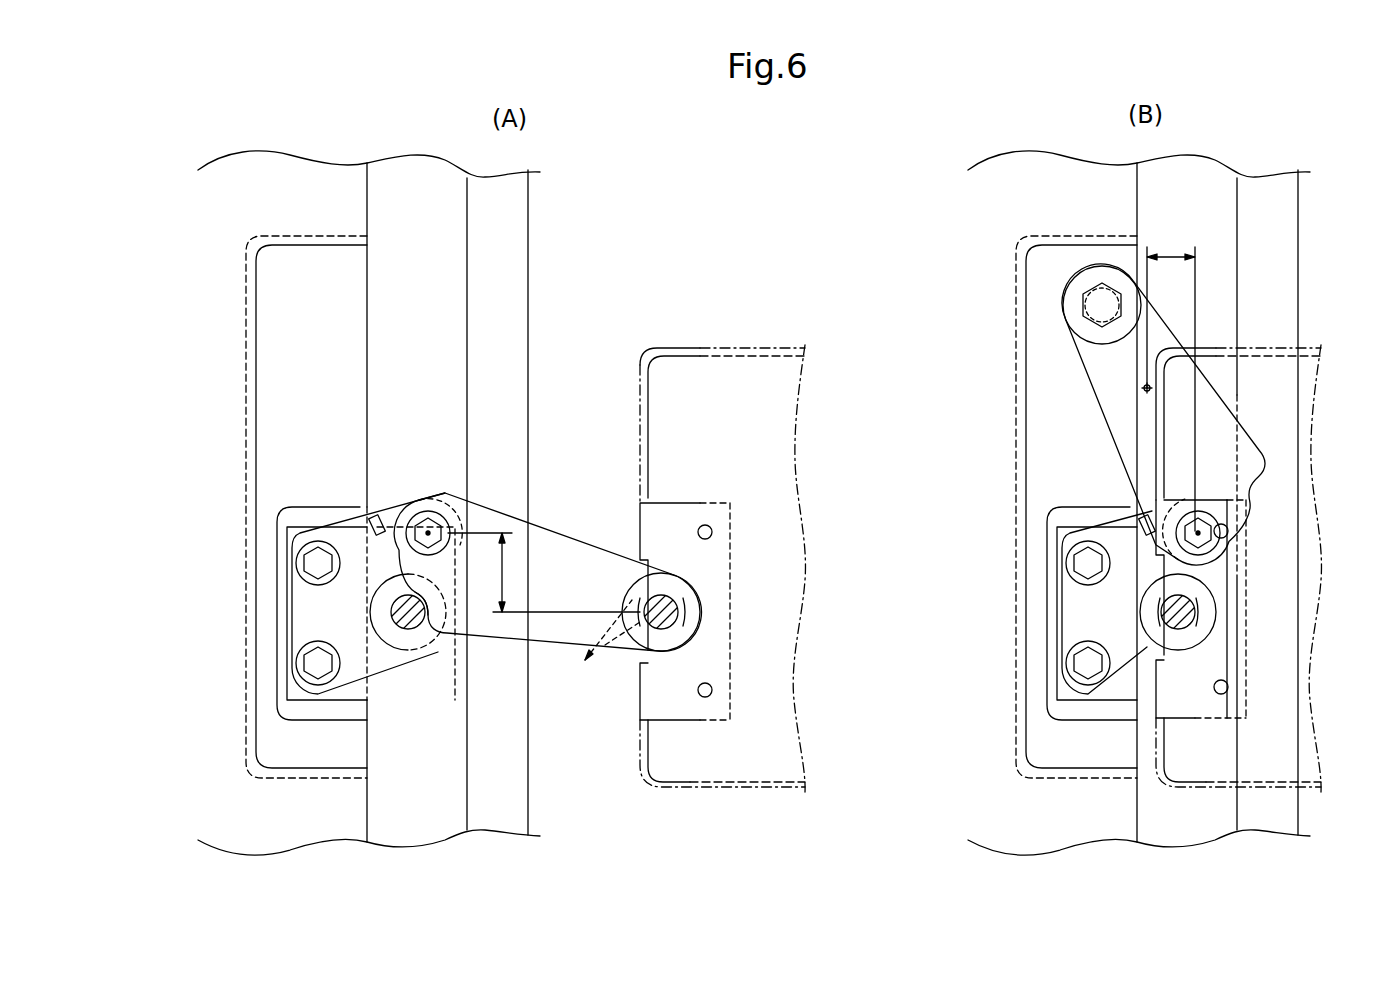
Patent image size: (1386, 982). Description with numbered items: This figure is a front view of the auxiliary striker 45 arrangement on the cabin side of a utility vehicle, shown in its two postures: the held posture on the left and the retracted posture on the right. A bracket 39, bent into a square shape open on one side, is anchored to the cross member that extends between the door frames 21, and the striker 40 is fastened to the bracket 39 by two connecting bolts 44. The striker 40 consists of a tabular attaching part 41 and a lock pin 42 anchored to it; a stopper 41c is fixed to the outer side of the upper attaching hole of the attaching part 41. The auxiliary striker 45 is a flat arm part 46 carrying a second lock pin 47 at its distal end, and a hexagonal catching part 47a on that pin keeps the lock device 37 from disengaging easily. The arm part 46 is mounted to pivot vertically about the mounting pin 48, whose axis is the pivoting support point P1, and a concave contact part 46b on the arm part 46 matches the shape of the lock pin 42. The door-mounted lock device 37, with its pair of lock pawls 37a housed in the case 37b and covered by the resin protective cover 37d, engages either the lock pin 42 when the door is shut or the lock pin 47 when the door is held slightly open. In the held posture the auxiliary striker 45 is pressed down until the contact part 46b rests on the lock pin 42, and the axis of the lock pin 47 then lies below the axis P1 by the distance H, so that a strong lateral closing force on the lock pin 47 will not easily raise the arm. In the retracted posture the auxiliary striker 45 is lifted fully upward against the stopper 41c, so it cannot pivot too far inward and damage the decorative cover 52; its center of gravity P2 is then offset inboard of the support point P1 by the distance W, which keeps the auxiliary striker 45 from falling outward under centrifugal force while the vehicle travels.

The door frame 21 is at (523, 254).
The lock device 37 is at (636, 502).
The lock pawl 37a is at (1151, 652).
The case 37b is at (706, 760).
The protective cover 37d is at (706, 345).
The bracket 39 is at (293, 697).
The striker 40 is at (403, 637).
The attaching part 41 is at (358, 700).
The stopper 41c is at (376, 518).
The lock pin 42 is at (390, 611).
The connecting bolt 44 is at (318, 660).
The auxiliary striker 45 is at (673, 652).
The arm part 46 is at (555, 532).
The contact part 46b is at (414, 636).
The lock pin 47 is at (700, 612).
The catching part 47a is at (1080, 310).
The mounting pin 48 is at (441, 525).
The decorative cover 52 is at (262, 293).
The axis of the auxiliary striker P1 is at (427, 530).
The center of gravity P2 is at (1143, 392).
The height offset H is at (544, 572).
The lateral offset W is at (1171, 378).